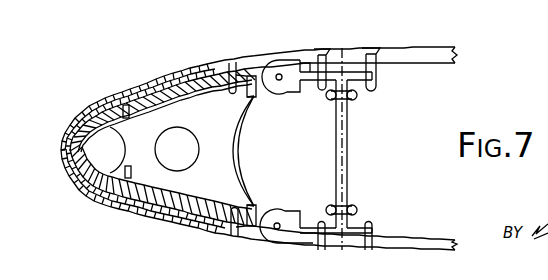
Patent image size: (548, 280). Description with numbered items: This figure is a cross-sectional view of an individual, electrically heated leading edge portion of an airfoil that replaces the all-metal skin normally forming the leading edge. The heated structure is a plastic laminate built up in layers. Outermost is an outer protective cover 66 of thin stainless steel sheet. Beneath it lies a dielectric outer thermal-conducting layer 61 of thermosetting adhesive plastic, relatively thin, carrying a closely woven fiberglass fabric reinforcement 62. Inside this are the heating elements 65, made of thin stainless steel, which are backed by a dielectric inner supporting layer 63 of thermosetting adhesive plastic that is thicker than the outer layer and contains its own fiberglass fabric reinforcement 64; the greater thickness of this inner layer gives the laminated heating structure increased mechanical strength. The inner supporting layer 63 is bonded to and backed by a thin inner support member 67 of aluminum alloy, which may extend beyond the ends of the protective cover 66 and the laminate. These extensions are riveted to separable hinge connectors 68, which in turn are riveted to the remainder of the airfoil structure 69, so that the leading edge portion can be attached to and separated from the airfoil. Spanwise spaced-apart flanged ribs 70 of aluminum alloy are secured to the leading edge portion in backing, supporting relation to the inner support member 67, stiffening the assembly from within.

The dielectric outer thermal-conducting layer 61 is at (92, 183).
The fiberglass fabric reinforcement 62 is at (145, 90).
The dielectric inner supporting layer 63 is at (174, 99).
The fiberglass fabric reinforcement 64 is at (166, 188).
The heating elements 65 is at (160, 215).
The outer protective cover 66 is at (77, 124).
The inner support member 67 is at (155, 149).
The separable hinge connectors 68 is at (279, 80).
The remainder of the airfoil structure 69 is at (365, 192).
The flanged ribs 70 is at (220, 150).